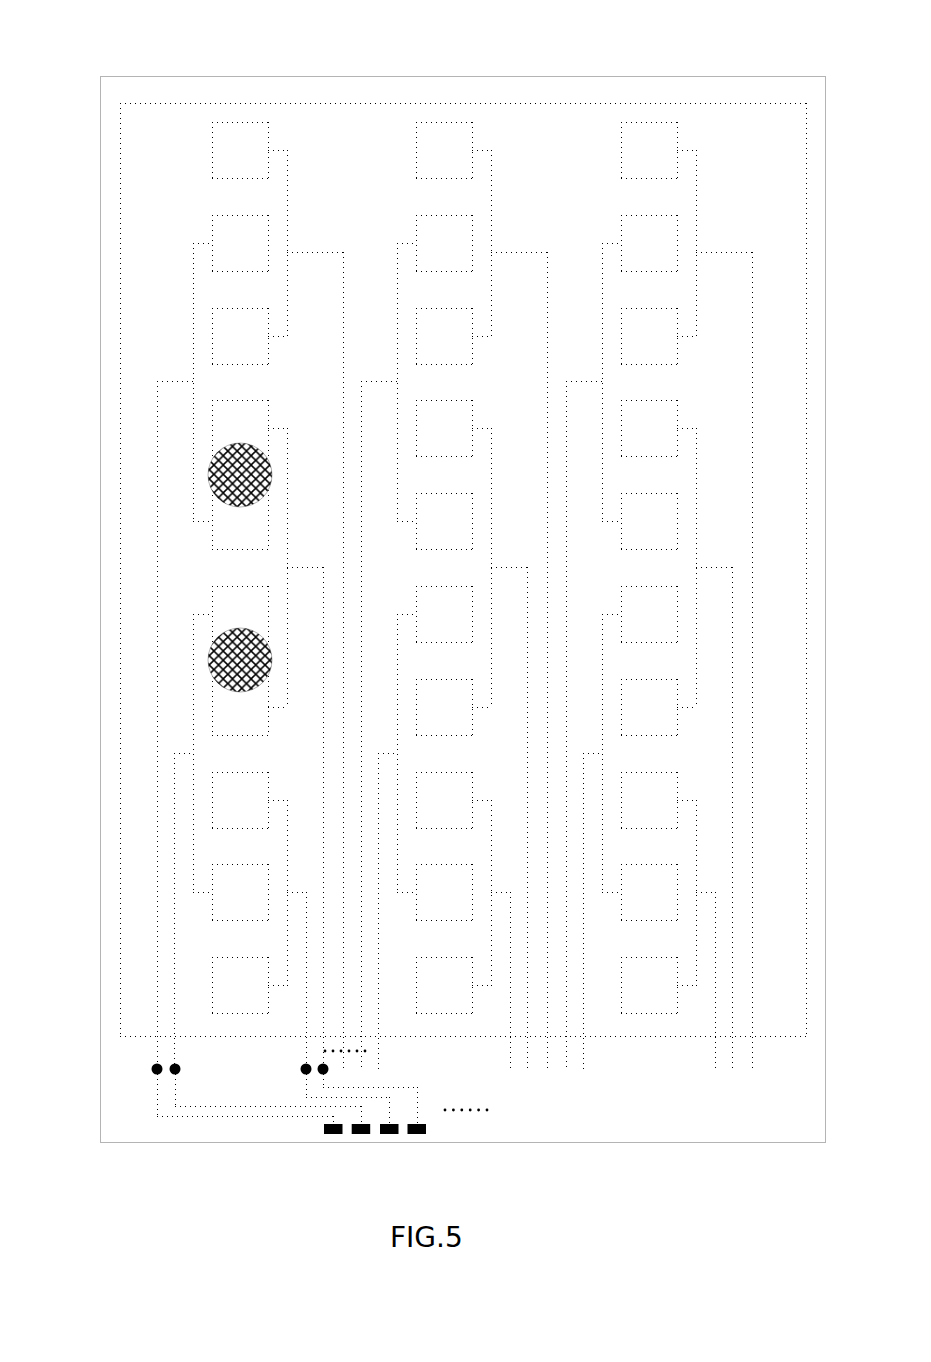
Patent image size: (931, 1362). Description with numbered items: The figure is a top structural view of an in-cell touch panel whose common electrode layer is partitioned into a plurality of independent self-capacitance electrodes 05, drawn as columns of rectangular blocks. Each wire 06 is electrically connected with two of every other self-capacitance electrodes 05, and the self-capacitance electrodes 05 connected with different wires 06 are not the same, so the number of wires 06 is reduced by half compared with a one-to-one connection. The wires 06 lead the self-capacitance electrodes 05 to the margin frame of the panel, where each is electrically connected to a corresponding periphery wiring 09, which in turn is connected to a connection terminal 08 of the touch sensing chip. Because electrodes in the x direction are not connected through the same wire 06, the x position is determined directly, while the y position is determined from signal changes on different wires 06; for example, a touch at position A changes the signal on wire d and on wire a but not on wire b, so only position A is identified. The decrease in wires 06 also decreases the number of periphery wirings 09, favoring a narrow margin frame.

The self-capacitance electrode 05 is at (241, 122).
The wire 06 is at (156, 935).
The connection terminal 08 is at (327, 1133).
The periphery wiring 09 is at (255, 1115).